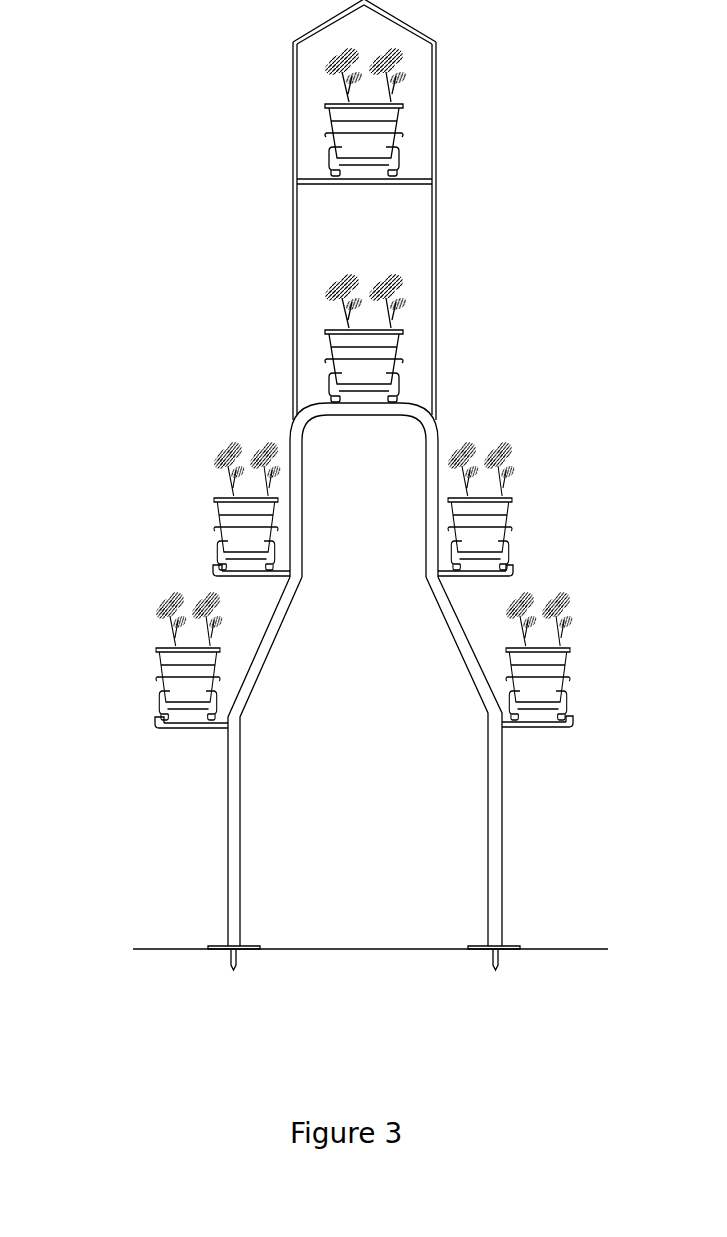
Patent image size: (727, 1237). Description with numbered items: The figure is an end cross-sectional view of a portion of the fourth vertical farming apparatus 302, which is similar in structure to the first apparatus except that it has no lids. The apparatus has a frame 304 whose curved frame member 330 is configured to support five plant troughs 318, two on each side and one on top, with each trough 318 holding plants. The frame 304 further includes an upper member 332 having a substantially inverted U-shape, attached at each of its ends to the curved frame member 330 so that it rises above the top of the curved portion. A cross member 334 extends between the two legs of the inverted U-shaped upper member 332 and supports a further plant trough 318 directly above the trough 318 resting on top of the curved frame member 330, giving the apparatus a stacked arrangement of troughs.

The fourth vertical farming apparatus 302 is at (324, 210).
The frame 304 is at (332, 686).
The plant trough 318 is at (240, 542).
The curved frame member 330 is at (495, 826).
The upper member 332 is at (435, 229).
The cross member 334 is at (313, 181).